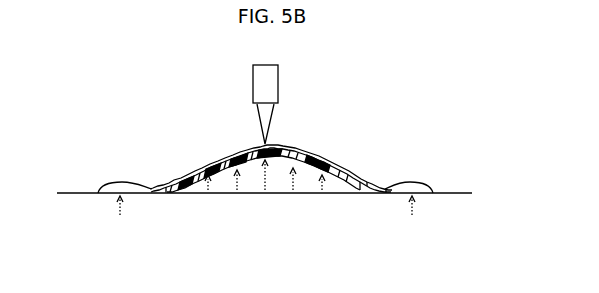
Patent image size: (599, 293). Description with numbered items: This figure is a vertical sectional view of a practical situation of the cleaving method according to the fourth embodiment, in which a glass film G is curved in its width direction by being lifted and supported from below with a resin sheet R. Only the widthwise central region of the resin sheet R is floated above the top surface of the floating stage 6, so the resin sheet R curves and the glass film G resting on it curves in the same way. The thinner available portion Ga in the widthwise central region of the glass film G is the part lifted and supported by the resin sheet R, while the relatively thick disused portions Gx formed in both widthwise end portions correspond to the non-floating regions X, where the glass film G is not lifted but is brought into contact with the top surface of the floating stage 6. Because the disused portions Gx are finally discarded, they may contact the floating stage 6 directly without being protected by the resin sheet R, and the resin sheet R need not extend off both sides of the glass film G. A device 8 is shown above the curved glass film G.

The floating stage 6 is at (453, 190).
The laser irradiation device 8 is at (280, 83).
The available portion Ga is at (222, 156).
The glass film G is at (313, 156).
The resin sheet R is at (339, 160).
The disused portions Gx is at (413, 182).
The non-floating regions X is at (266, 220).